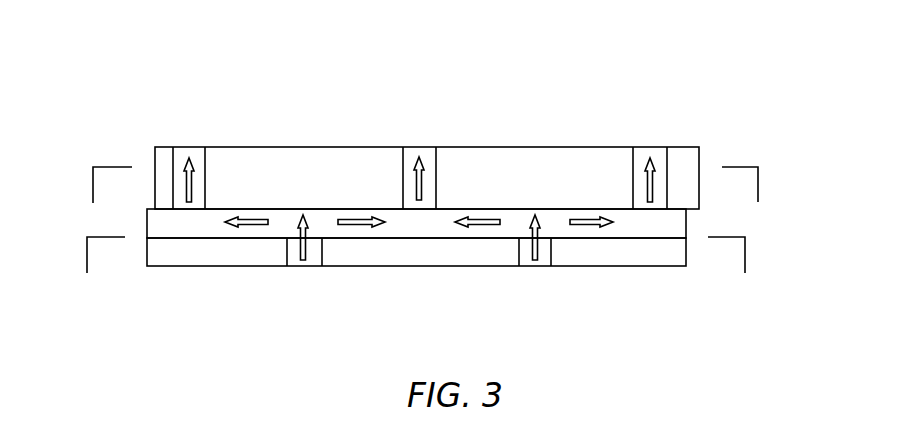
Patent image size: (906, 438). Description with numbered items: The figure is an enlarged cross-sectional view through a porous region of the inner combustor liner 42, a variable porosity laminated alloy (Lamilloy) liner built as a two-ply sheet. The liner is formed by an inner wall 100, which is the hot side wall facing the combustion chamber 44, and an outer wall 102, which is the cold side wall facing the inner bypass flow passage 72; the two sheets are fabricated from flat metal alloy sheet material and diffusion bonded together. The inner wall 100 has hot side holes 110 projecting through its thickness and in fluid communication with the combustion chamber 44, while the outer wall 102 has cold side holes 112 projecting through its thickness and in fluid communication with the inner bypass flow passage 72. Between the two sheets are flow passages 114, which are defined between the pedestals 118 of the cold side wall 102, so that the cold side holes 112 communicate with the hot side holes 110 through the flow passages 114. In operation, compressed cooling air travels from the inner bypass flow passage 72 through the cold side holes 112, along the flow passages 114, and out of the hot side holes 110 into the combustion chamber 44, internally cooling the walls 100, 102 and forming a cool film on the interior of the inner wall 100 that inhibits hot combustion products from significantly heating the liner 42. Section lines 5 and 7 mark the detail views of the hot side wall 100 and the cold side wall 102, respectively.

The inner combustor liner 42 is at (588, 92).
The combustion chamber 44 is at (307, 54).
The inner bypass flow passage 72 is at (319, 383).
The inner wall 100 is at (512, 172).
The outer wall 102 is at (436, 250).
The hot side holes 110 is at (436, 167).
The cold side holes 112 is at (313, 258).
The flow passages 114 is at (413, 222).
The pedestals 118 is at (218, 207).
The section line 5- 5 is at (426, 199).
The section line 7- 7 is at (416, 268).